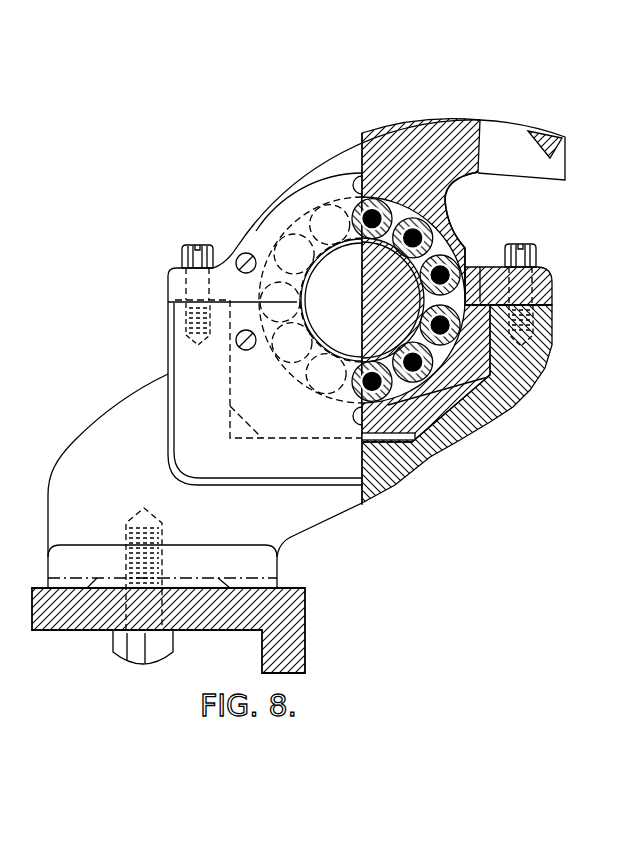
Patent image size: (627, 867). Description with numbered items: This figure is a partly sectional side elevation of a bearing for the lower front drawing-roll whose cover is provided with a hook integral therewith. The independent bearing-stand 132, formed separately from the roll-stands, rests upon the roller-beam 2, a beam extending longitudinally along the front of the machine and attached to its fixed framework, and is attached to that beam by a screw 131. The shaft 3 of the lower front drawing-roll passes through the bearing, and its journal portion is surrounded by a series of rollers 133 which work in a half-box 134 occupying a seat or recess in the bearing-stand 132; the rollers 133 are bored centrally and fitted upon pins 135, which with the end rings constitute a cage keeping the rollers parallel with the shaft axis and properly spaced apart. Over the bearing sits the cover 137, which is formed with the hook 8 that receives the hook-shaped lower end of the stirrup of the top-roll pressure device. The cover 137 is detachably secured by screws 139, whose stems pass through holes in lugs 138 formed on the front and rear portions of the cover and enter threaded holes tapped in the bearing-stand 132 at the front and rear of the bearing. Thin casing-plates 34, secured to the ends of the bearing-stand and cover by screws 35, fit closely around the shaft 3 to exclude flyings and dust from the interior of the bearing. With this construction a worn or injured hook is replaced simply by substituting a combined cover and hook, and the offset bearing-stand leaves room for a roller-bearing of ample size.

The hook 8 is at (472, 119).
The cover 137 is at (450, 200).
The rollers 133 is at (432, 236).
The screws 139 is at (181, 247).
The lugs 138 is at (167, 287).
The shaft of the lower front drawing-roll 3 is at (317, 318).
The screws 35 is at (236, 345).
The casing-plates 34 is at (295, 227).
The pins 135 is at (555, 327).
The half-box 134 is at (438, 405).
The bearing-stand 132 is at (283, 528).
The roller-beam 2 is at (306, 603).
The screw 131 is at (176, 656).